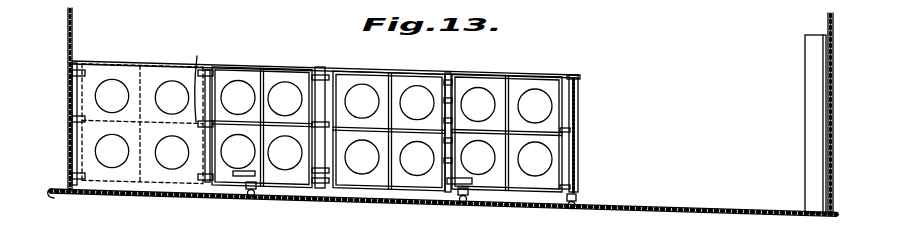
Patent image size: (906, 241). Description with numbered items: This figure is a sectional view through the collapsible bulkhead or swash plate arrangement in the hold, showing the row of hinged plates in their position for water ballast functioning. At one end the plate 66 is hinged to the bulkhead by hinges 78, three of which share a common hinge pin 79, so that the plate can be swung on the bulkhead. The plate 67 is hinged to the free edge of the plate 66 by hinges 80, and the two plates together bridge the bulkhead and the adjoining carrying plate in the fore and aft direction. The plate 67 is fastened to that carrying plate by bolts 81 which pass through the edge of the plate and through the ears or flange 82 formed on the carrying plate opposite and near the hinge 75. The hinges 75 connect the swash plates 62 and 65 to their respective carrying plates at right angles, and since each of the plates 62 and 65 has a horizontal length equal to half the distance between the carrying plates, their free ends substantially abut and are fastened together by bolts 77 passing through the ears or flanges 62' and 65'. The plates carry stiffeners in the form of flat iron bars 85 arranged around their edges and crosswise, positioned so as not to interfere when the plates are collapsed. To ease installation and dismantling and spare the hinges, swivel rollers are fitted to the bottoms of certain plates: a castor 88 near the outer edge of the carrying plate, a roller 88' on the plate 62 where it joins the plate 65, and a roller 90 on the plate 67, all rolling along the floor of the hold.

The swash plate 62 is at (511, 119).
The ear or flange 62' is at (507, 184).
The swash plate 65 is at (389, 151).
The ear or flange 65' is at (452, 202).
The plate 66 is at (113, 178).
The plate 67 is at (274, 176).
The hinge 75 is at (334, 73).
The bolt 77 is at (453, 108).
The hinge 78 is at (79, 110).
The common hinge pin 79 is at (57, 192).
The hinge 80 is at (199, 70).
The bolt 81 is at (318, 73).
The ear or flange 82 is at (315, 105).
The iron bar 85 is at (142, 174).
The swivel roller or castor 88 is at (594, 197).
The roller 88' is at (479, 212).
The roller 90 is at (249, 189).